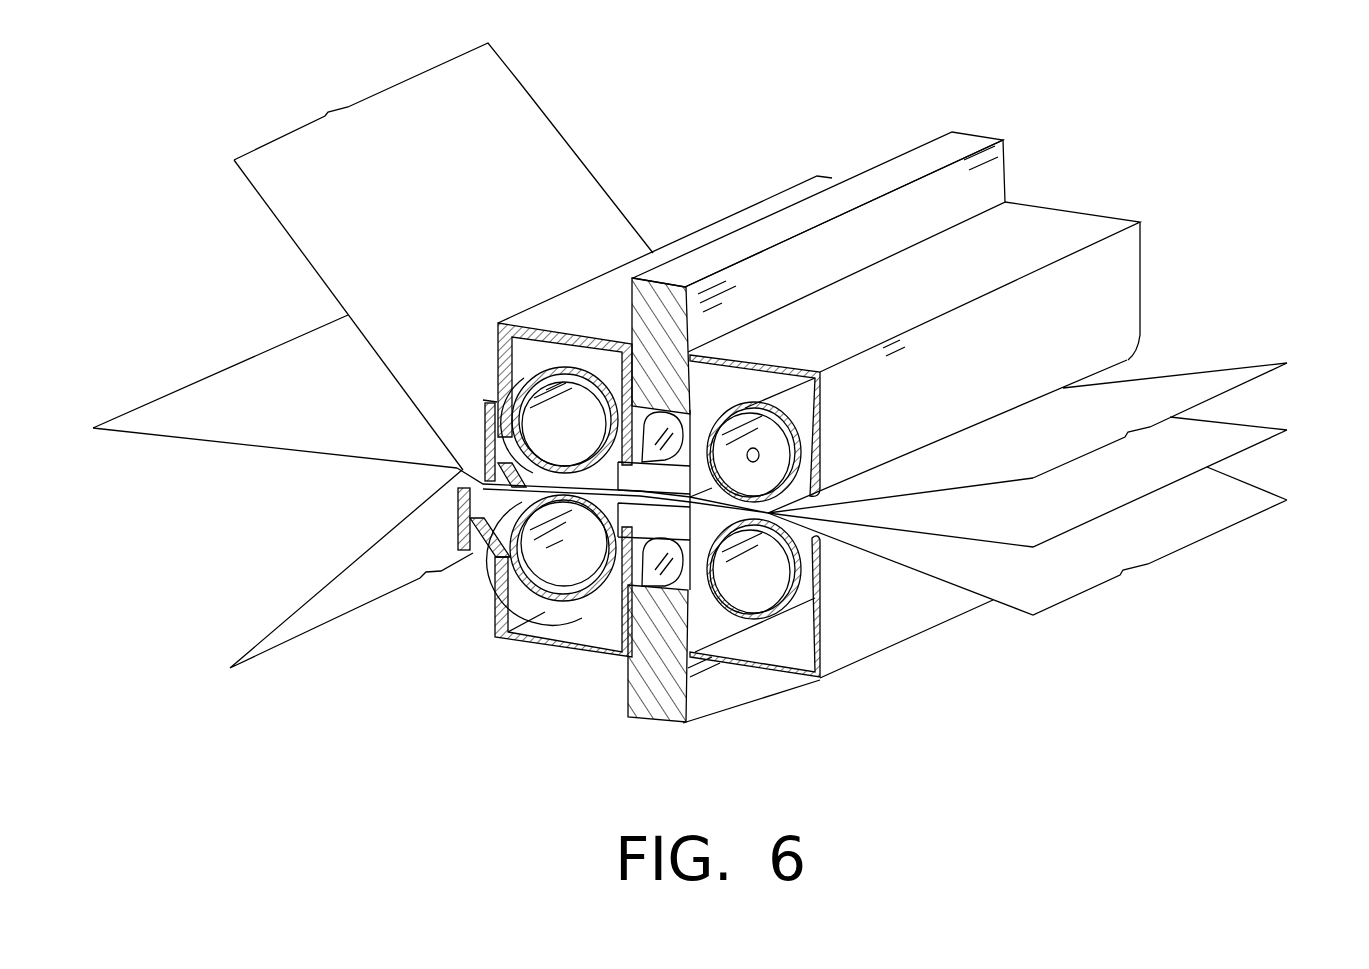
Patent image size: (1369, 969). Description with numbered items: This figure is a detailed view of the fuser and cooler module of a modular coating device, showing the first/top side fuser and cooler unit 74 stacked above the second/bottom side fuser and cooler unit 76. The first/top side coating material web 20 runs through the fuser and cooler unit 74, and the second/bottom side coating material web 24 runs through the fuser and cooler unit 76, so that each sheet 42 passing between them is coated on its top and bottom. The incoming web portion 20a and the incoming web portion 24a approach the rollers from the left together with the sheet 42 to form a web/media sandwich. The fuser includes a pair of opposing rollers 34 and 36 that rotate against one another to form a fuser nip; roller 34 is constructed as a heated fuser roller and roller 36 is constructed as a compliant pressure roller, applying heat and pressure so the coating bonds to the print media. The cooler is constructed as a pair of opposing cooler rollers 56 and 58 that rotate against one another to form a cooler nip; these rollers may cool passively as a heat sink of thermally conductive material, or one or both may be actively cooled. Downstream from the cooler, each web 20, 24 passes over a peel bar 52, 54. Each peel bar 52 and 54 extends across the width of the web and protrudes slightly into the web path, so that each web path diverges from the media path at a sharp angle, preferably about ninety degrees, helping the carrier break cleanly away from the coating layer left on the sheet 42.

The web 20a is at (514, 88).
The first/top side fuser and cooler unit 74 is at (1077, 156).
The second/bottom side fuser and cooler unit 76 is at (531, 695).
The first/top side coating material web 20 is at (1203, 385).
The sheet 42 is at (197, 402).
The second/bottom side coating material web 24 is at (1254, 502).
The web 24a is at (311, 620).
The roller 34 is at (798, 451).
The roller 36 is at (798, 584).
The cooler roller 56 is at (523, 398).
The cooler roller 58 is at (506, 585).
The peel bar 52 is at (483, 453).
The peel bar 54 is at (457, 538).